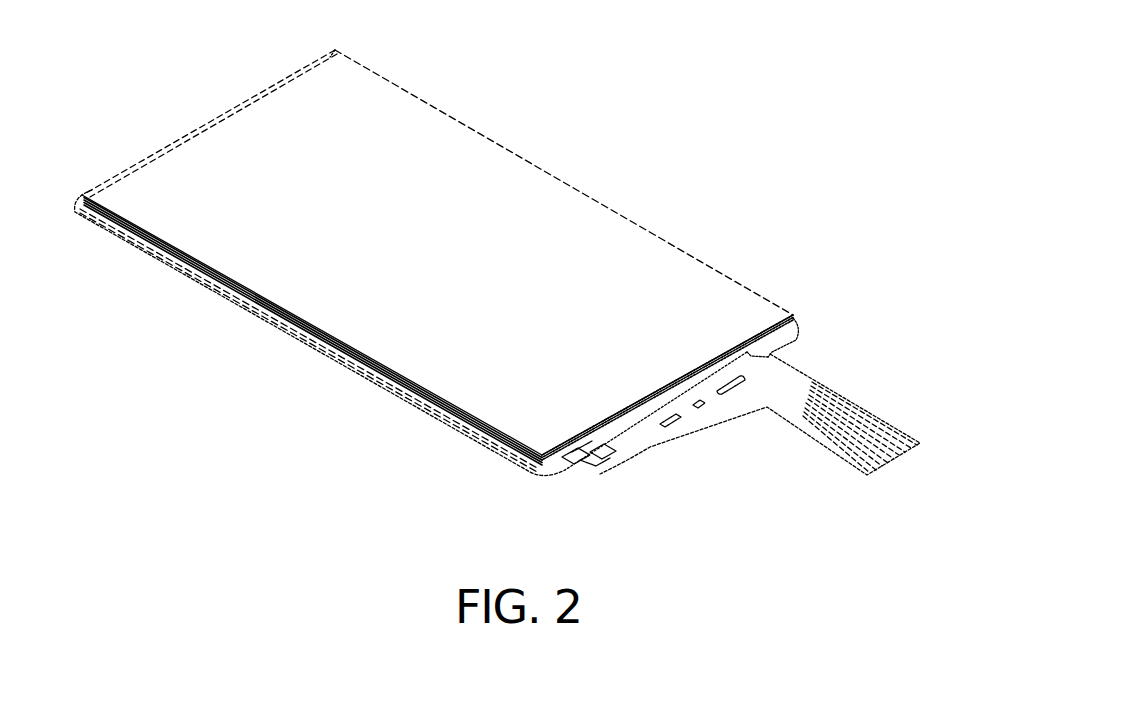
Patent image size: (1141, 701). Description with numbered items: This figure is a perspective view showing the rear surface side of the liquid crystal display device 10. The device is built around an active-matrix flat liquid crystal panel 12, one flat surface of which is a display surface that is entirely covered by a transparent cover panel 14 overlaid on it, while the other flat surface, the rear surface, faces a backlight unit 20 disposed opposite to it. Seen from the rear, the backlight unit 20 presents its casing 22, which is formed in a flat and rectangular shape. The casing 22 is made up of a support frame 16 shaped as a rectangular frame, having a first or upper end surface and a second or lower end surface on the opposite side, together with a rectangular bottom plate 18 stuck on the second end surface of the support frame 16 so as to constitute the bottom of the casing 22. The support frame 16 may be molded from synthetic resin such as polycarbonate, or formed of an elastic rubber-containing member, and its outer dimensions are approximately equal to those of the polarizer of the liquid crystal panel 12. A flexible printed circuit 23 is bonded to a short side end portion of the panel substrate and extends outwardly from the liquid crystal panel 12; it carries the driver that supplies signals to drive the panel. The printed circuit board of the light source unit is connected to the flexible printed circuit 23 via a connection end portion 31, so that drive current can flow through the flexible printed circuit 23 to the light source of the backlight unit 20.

The liquid crystal display device 10 is at (437, 267).
The liquid crystal panel 12 is at (215, 290).
The transparent cover panel 14 is at (443, 422).
The support frame 16 is at (163, 250).
The bottom plate 18 is at (412, 112).
The backlight unit 20 is at (578, 218).
The casing 22 is at (482, 176).
The flexible printed circuit 23 is at (728, 408).
The connection end portion 31 is at (573, 460).